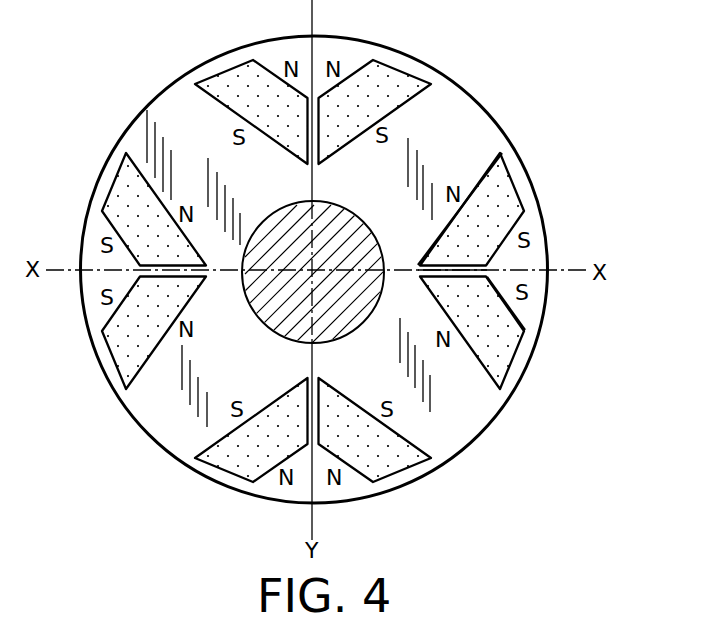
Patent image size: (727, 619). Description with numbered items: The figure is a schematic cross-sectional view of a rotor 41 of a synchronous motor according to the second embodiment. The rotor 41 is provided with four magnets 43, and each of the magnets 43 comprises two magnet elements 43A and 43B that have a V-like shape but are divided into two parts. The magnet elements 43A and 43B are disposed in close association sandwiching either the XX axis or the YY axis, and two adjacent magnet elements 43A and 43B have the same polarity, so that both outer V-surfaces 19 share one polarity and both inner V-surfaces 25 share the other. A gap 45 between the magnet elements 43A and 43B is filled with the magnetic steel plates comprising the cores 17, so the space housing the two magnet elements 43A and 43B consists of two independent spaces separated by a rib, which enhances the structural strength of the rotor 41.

The rotor 41 is at (351, 251).
The cores 17 is at (483, 143).
The outer V-surfaces 19 is at (440, 237).
The magnets 43 is at (361, 281).
The magnet element 43A is at (515, 182).
The magnet element 43B is at (503, 338).
The gap 45 is at (473, 268).
The inner V-surfaces 25 is at (514, 308).